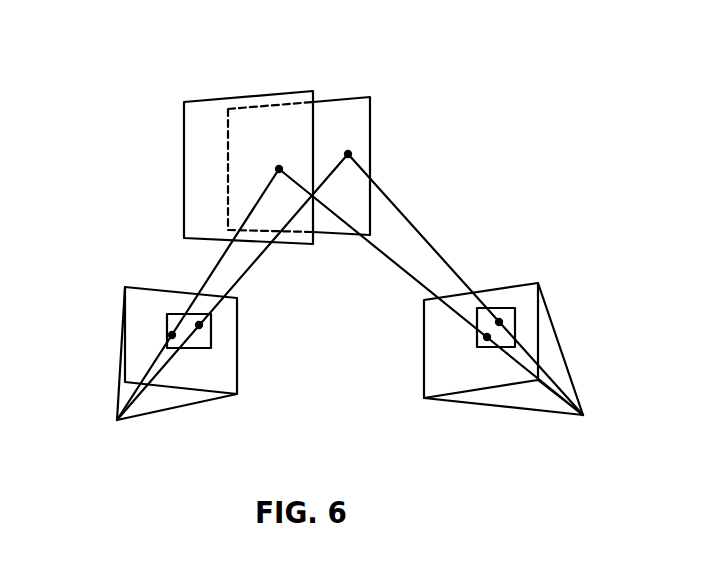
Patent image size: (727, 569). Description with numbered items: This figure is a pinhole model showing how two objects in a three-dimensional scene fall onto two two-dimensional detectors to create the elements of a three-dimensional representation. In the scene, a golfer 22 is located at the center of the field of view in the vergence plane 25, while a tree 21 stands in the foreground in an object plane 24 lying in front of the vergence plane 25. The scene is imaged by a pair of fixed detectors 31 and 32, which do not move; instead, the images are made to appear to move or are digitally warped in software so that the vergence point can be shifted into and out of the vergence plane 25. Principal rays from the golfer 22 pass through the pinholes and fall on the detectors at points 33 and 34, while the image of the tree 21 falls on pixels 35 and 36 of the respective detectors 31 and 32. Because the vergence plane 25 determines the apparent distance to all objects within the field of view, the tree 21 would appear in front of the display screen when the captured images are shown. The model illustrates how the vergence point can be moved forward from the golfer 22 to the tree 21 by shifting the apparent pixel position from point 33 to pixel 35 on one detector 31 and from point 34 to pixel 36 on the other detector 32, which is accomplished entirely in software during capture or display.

The tree 21 is at (279, 169).
The golfer 22 is at (348, 154).
The object plane 24 is at (192, 136).
The vergence plane 25 is at (365, 104).
The fixed detector 31 is at (237, 347).
The fixed detector 32 is at (424, 340).
The pixel point 33 is at (170, 334).
The pixel point 34 is at (487, 340).
The pixel 35 is at (198, 320).
The pixel 36 is at (501, 318).